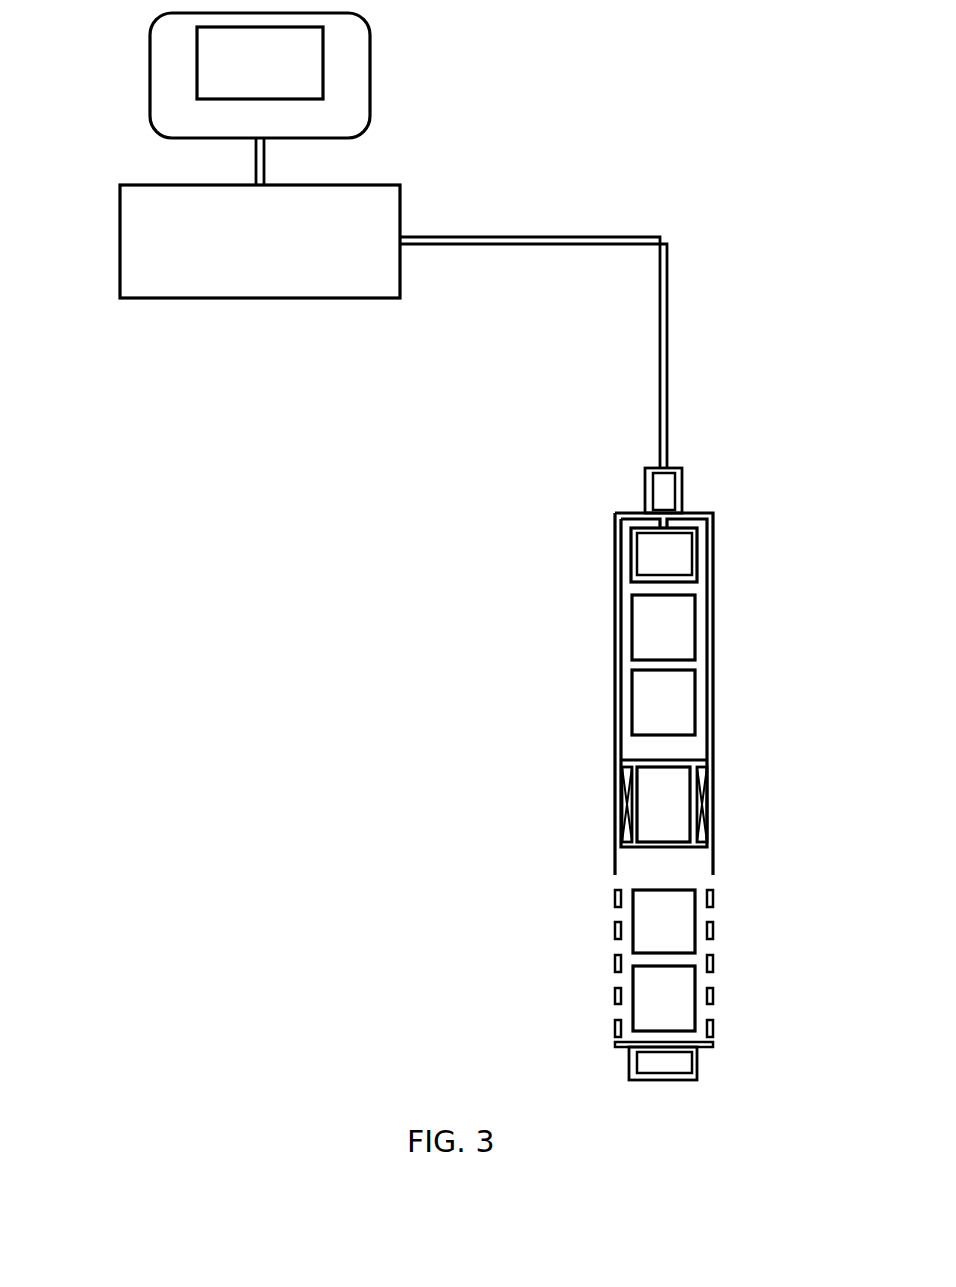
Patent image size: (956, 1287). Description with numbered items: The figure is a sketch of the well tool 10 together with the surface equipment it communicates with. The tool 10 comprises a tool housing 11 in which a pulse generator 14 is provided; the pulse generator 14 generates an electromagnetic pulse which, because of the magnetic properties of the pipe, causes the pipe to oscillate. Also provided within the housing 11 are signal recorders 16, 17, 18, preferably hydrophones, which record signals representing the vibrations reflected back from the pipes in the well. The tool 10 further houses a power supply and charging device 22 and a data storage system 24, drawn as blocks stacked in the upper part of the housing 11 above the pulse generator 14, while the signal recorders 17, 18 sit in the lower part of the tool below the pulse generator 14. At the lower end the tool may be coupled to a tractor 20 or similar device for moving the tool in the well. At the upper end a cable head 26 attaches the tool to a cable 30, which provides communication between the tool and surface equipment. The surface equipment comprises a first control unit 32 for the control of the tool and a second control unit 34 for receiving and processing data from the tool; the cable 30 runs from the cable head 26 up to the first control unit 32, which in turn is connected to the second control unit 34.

The well tool 10 is at (765, 549).
The tool housing 11 is at (713, 645).
The pulse generator 14 is at (713, 801).
The signal recorder 16 is at (632, 708).
The signal recorder 17 is at (633, 920).
The signal recorder 18 is at (633, 1005).
The tractor 20 is at (697, 1068).
The power supply and charging device 22 is at (632, 630).
The data storage system 24 is at (631, 553).
The cable head 26 is at (682, 487).
The cable 30 is at (667, 399).
The first control unit 32 is at (120, 238).
The second control unit 34 is at (370, 76).